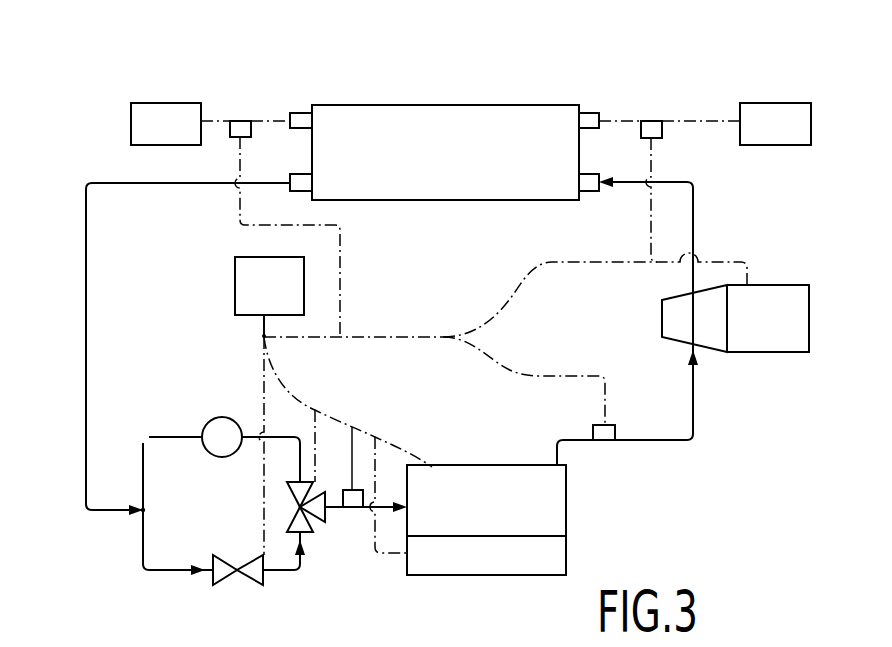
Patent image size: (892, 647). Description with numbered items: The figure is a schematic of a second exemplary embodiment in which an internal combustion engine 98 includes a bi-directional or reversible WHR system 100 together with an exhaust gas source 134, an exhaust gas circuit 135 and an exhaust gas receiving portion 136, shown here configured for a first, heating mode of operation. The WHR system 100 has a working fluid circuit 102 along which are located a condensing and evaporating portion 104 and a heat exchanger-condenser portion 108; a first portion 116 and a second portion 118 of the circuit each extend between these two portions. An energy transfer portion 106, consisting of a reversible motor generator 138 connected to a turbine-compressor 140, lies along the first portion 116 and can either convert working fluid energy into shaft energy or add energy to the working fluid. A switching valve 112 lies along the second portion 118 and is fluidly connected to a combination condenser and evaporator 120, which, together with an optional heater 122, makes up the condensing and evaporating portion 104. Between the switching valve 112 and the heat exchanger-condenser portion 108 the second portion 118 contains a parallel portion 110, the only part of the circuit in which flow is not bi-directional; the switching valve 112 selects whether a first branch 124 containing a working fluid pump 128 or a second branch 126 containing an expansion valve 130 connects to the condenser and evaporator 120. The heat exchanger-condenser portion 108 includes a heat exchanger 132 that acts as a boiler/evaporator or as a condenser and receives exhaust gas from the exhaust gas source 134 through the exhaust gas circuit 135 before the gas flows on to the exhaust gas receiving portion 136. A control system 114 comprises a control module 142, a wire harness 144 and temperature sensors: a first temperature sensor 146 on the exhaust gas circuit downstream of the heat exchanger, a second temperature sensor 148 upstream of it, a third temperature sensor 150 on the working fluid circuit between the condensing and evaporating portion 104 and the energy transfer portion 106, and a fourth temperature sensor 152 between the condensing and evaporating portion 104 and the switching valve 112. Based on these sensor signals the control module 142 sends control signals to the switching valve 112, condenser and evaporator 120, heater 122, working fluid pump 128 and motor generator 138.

The internal combustion engine 98 is at (86, 55).
The WHR system 100 is at (732, 553).
The working fluid circuit 102 is at (72, 290).
The condensing and evaporating portion 104 is at (422, 400).
The energy transfer portion 106 is at (625, 326).
The heat exchanger-condenser portion 108 is at (354, 70).
The parallel portion 110 is at (148, 408).
The switching valve 112 is at (318, 516).
The control system 114 is at (198, 265).
The first portion 116 is at (695, 202).
The second portion 118 is at (86, 190).
The combination condenser and evaporator 120 is at (502, 515).
The heater 122 is at (502, 570).
The first branch 124 is at (144, 478).
The second branch 126 is at (144, 535).
The working fluid pump 128 is at (217, 418).
The expansion valve 130 is at (231, 585).
The heat exchanger 132 is at (462, 167).
The exhaust gas source 134 is at (183, 135).
The exhaust gas circuit 135 is at (275, 121).
The exhaust gas receiving portion 136 is at (792, 135).
The motor generator 138 is at (784, 331).
The turbine-compressor 140 is at (673, 339).
The control module 142 is at (286, 301).
The wire harness 144 is at (264, 333).
The first temperature sensor 146 is at (650, 121).
The second temperature sensor 148 is at (235, 121).
The third temperature sensor 150 is at (603, 441).
The fourth temperature sensor 152 is at (350, 508).